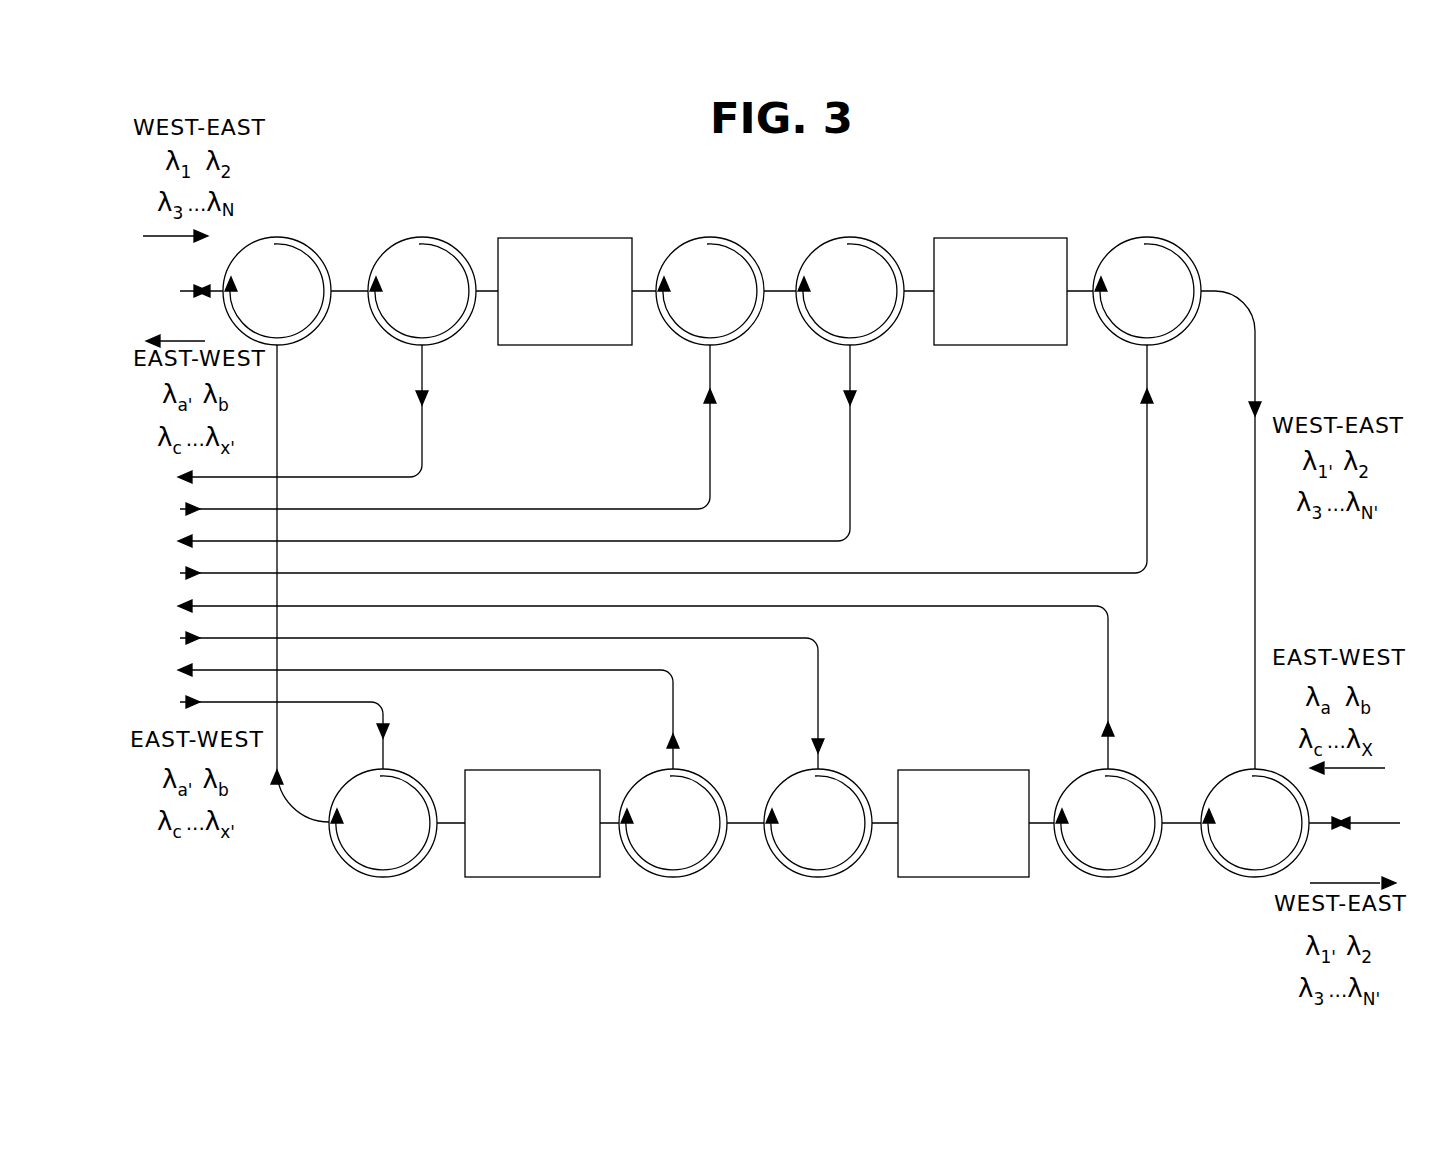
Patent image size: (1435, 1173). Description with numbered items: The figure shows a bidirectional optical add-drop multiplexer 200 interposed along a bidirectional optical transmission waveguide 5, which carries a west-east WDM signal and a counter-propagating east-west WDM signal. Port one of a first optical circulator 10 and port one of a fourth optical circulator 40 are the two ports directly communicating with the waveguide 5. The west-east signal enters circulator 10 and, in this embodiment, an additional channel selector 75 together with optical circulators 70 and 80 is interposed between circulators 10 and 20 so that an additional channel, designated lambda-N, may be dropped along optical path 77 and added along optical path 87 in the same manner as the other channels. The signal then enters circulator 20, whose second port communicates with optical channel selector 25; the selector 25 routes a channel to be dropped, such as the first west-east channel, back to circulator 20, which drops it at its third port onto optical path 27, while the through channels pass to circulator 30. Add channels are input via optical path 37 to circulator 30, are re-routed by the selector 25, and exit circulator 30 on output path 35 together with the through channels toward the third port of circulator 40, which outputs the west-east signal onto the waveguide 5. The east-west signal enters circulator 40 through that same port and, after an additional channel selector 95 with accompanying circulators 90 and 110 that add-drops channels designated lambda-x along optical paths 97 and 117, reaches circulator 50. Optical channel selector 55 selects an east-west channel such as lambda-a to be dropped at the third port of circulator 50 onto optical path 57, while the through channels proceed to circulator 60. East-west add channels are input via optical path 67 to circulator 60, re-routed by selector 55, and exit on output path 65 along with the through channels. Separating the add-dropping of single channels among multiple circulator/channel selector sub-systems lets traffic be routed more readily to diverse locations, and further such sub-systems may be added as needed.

The bidirectional optical transmission waveguide 5 is at (204, 293).
The optical circulator 10 is at (291, 243).
The optical circulator 20 is at (860, 241).
The optical channel selector 25 is at (1016, 243).
The optical path 27 is at (783, 541).
The optical circulator 30 is at (1155, 240).
The output path 35 is at (1256, 390).
The optical path 37 is at (1022, 573).
The optical circulator 40 is at (1248, 871).
The optical circulator 50 is at (664, 871).
The optical channel selector 55 is at (527, 871).
The optical path 57 is at (675, 722).
The optical circulator 60 is at (380, 871).
The output path 65 is at (298, 813).
The optical path 67 is at (383, 721).
The optical circulator 70 is at (414, 249).
The channel selector 75 is at (562, 248).
The optical path 77 is at (357, 477).
The optical circulator 80 is at (710, 240).
The optical path 87 is at (601, 508).
The optical circulator 90 is at (1104, 871).
The channel selector 95 is at (956, 877).
The optical path 97 is at (1107, 664).
The optical circulator 110 is at (815, 871).
The optical path 117 is at (818, 720).
The bidirectional optical add-drop multiplexer 200 is at (277, 972).